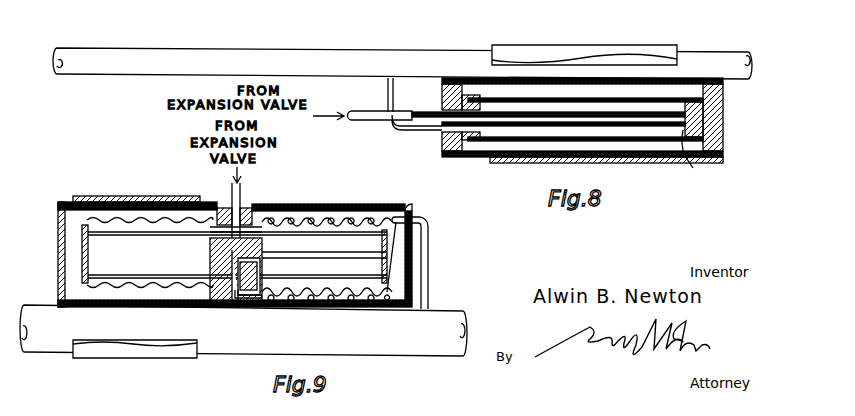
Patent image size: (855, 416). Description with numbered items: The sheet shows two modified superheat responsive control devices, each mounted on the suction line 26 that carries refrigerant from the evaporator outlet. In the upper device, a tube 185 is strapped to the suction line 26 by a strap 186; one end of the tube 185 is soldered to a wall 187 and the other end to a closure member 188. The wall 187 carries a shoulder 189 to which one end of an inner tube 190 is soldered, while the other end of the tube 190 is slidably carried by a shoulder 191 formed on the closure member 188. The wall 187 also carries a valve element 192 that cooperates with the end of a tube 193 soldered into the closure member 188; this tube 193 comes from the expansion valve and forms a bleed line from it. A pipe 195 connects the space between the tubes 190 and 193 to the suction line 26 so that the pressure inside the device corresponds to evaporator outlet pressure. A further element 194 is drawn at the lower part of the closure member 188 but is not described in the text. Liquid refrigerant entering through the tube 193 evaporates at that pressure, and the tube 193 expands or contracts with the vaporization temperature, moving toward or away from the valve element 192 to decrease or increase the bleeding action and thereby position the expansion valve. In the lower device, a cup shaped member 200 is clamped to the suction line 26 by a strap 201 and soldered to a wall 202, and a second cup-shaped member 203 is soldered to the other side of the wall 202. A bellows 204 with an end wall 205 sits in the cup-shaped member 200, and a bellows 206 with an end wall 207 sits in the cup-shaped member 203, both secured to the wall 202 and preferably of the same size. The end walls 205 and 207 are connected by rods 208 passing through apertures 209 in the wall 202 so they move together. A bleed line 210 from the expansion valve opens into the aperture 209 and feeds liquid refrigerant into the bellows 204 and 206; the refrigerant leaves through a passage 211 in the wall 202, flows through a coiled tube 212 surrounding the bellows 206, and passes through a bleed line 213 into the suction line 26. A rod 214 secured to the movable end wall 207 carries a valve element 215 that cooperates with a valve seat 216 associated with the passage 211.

In FIG. 8, the suction line 26 is at (303, 52).
In FIG. 9, the suction line 26 is at (390, 345).
In FIG. 8, the strap 186 is at (583, 45).
In FIG. 8, the tube 185 is at (475, 164).
In FIG. 8, the wall 187 is at (723, 100).
In FIG. 8, the closure member 188 is at (442, 90).
In FIG. 8, the shoulder 189 is at (703, 136).
In FIG. 8, the tube 190 is at (698, 157).
In FIG. 8, the shoulder 191 is at (442, 104).
In FIG. 8, the valve element 192 is at (703, 120).
In FIG. 8, the tube 193 is at (362, 122).
In FIG. 8, the lower plug 194 is at (442, 140).
In FIG. 8, the pipe 195 is at (416, 136).
In FIG. 9, the cup shaped member 200 is at (58, 248).
In FIG. 9, the strap 201 is at (119, 350).
In FIG. 9, the wall 202 is at (210, 262).
In FIG. 9, the cup-shaped member 203 is at (340, 210).
In FIG. 9, the bellows 204 is at (137, 218).
In FIG. 9, the end wall 205 is at (88, 250).
In FIG. 9, the bellows 206 is at (318, 214).
In FIG. 9, the end wall 207 is at (382, 245).
In FIG. 9, the rods 208 is at (125, 232).
In FIG. 9, the apertures 209 is at (210, 243).
In FIG. 9, the bleed line 210 is at (240, 192).
In FIG. 9, the passage 211 is at (236, 308).
In FIG. 9, the coiled tube 212 is at (318, 312).
In FIG. 9, the bleed line 213 is at (428, 272).
In FIG. 9, the rod 214 is at (306, 252).
In FIG. 9, the valve element 215 is at (262, 248).
In FIG. 9, the valve seat 216 is at (262, 268).